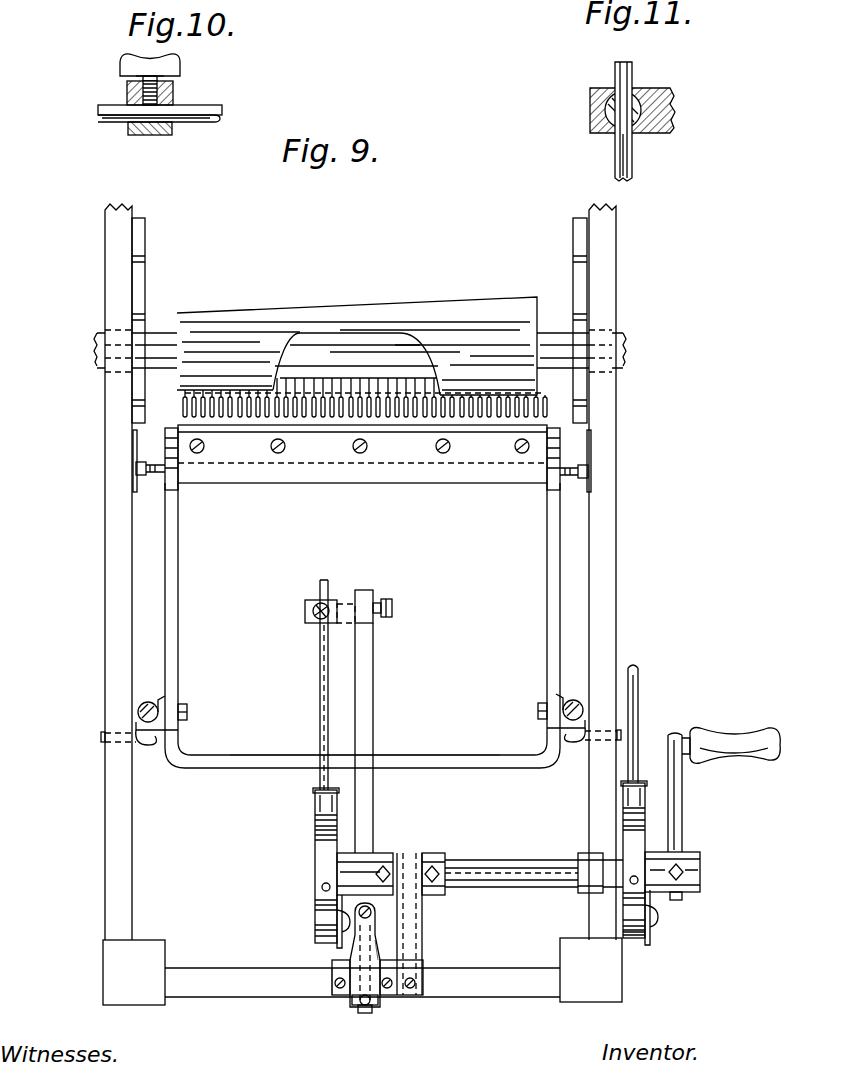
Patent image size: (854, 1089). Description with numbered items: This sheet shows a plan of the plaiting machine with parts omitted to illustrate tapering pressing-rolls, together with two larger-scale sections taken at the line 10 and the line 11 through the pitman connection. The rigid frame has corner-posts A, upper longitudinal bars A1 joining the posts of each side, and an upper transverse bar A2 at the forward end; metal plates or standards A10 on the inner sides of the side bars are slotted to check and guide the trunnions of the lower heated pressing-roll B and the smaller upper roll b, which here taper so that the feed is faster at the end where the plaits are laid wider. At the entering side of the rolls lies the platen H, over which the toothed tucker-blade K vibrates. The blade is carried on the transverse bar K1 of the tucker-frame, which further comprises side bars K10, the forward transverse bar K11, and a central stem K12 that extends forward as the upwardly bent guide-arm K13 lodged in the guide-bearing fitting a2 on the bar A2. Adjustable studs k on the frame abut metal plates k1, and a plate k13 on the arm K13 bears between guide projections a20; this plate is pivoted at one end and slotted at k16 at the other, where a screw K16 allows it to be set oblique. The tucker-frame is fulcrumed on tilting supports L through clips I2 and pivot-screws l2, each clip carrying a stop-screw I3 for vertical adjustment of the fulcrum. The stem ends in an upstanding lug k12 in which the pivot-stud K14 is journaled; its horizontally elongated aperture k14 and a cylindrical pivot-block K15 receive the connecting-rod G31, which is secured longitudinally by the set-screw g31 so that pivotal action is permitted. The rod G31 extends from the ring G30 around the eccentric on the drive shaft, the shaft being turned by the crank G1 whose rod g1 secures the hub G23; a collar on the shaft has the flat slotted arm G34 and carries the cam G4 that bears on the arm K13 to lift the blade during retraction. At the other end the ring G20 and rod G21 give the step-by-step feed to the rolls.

In FIG. 9, the corner-post A is at (112, 963).
In FIG. 9, the upper longitudinal bar A1 is at (112, 604).
In FIG. 9, the upper transverse bar A2 is at (235, 990).
In FIG. 9, the metal plate or standard A10 is at (136, 292).
In FIG. 9, the upper pressing-roll b is at (225, 315).
In FIG. 9, the lower pressing-roll B is at (307, 350).
In FIG. 9, the platen H is at (398, 372).
In FIG. 9, the tucker-blade K is at (332, 392).
In FIG. 9, the transverse bar of tucker-frame K1 is at (407, 478).
In FIG. 9, the adjustable stud k is at (160, 482).
In FIG. 9, the metal plate k1 is at (137, 492).
In FIG. 9, the side bar of tucker-frame K10 is at (548, 601).
In FIG. 9, the forward transverse bar K11 is at (262, 768).
In FIG. 9, the stem K12 is at (373, 680).
In FIG. 9, the guide-arm K13 is at (373, 800).
In FIG. 10, the pivot-stud K14 is at (130, 122).
In FIG. 11, the pivot-stud K14 is at (660, 133).
In FIG. 9, the pivot-stud K14 is at (342, 600).
In FIG. 10, the cylindrical pivot-block K15 is at (152, 135).
In FIG. 11, the cylindrical pivot-block K15 is at (606, 110).
In FIG. 9, the screw K16 is at (365, 1013).
In FIG. 9, the upstanding finger or lug k12 is at (370, 598).
In FIG. 9, the guide plate k13 is at (383, 1008).
In FIG. 11, the aperture k14 is at (632, 82).
In FIG. 9, the transverse slot k16 is at (352, 1003).
In FIG. 9, the clip I2 is at (162, 700).
In FIG. 9, the stop-screw I3 is at (138, 709).
In FIG. 9, the pivot-screw l2 is at (188, 713).
In FIG. 9, the tilting support L is at (143, 748).
In FIG. 9, the crank G1 is at (734, 735).
In FIG. 9, the crank rod g1 is at (682, 800).
In FIG. 9, the cam G4 is at (380, 850).
In FIG. 9, the eccentric ring G20 is at (638, 940).
In FIG. 9, the rod or pitman G21 is at (638, 693).
In FIG. 9, the collar or hub G23 is at (694, 893).
In FIG. 9, the eccentric ring G30 is at (318, 848).
In FIG. 10, the connecting-rod or pitman G31 is at (190, 122).
In FIG. 11, the connecting-rod or pitman G31 is at (630, 160).
In FIG. 9, the connecting-rod or pitman G31 is at (320, 692).
In FIG. 10, the set-screw g31 is at (166, 78).
In FIG. 9, the flat arm G34 is at (325, 912).
In FIG. 9, the guide-bearing fitting a2 is at (340, 993).
In FIG. 9, the guide projection a20 is at (333, 963).
In FIG. 9, the section line 10 is at (318, 586).
In FIG. 10, the section line 11 is at (97, 113).